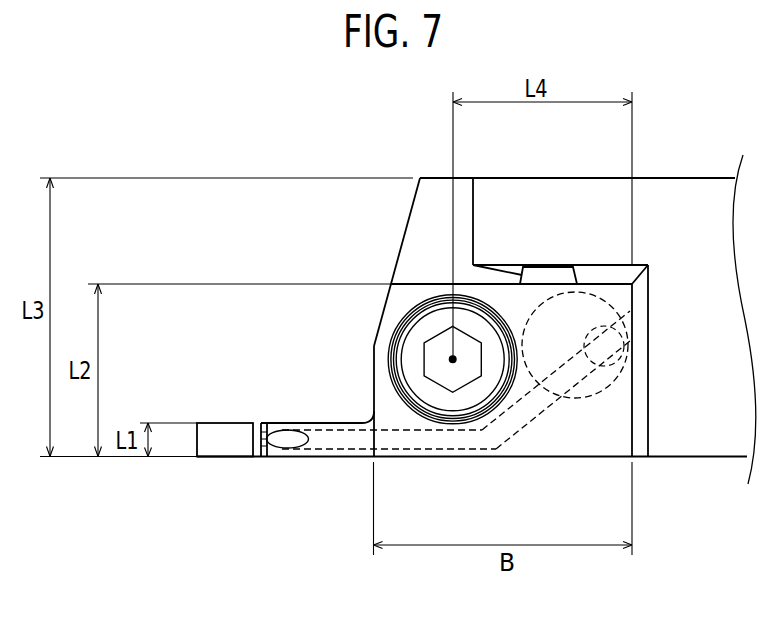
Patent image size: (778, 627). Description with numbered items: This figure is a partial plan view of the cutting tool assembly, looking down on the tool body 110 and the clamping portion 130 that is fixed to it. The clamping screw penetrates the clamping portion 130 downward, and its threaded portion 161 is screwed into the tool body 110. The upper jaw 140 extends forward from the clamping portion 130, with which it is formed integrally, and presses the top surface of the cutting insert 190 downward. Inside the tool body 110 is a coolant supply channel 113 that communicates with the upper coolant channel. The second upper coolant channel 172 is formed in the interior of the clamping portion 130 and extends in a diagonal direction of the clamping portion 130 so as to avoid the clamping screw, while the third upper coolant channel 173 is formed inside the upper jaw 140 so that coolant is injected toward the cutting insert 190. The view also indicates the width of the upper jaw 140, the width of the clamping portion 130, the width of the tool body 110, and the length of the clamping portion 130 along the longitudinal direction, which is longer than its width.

The tool body 110 is at (685, 192).
The coolant supply channel 113 is at (590, 292).
The clamping portion 130 is at (580, 440).
The upper jaw 140 is at (283, 427).
The threaded portion 161 is at (420, 330).
The second upper coolant channel 172 is at (523, 440).
The third upper coolant channel 173 is at (427, 440).
The cutting insert 190 is at (223, 428).